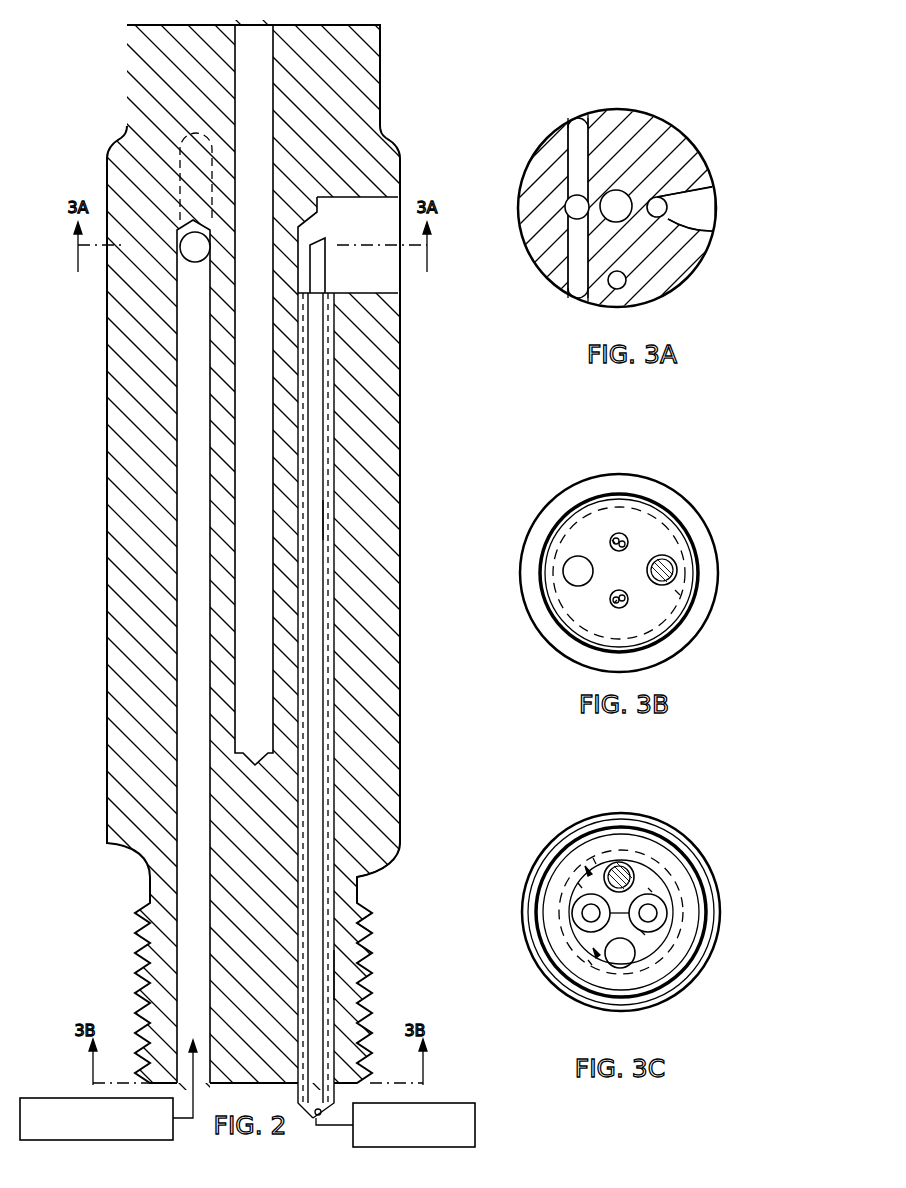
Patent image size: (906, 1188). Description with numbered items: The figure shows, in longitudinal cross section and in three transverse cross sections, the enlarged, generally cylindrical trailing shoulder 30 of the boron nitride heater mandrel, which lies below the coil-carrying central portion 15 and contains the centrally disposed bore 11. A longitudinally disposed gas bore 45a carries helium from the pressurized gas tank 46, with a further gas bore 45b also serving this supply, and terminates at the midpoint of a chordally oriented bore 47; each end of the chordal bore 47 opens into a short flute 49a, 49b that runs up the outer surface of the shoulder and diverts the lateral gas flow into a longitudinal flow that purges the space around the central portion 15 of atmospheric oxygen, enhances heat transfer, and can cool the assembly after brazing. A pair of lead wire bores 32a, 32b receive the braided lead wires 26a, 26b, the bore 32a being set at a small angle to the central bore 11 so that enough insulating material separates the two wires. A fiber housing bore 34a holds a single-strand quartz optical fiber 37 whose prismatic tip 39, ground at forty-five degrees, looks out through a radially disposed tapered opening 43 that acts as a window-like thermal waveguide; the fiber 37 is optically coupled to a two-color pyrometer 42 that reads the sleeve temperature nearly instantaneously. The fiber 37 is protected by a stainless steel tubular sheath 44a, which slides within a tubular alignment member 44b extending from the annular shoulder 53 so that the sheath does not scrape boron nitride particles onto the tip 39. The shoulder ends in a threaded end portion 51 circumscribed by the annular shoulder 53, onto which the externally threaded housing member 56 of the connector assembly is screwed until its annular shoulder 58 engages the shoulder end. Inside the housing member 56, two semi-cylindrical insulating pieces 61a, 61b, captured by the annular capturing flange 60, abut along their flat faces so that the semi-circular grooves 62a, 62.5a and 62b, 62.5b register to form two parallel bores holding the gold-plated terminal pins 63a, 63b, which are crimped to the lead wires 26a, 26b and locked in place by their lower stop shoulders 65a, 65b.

In FIG. 2, the centrally disposed bore 11 is at (238, 46).
In FIG. 3A, the centrally disposed bore 11 is at (620, 192).
In FIG. 2, the central portion 15 is at (176, 57).
In FIG. 2, the trailing shoulder 30 is at (140, 486).
In FIG. 3A, the trailing shoulder 30 is at (683, 118).
In FIG. 2, the chordally oriented bore 47 is at (195, 252).
In FIG. 3A, the chordally oriented bore 47 is at (575, 195).
In FIG. 2, the prismatic tip 39 is at (316, 242).
In FIG. 2, the tapered opening 43 is at (398, 293).
In FIG. 3A, the tapered opening 43 is at (716, 212).
In FIG. 2, the fiber housing bore 34a is at (328, 516).
In FIG. 3A, the fiber housing bore 34a is at (708, 187).
In FIG. 2, the gas bore 45a is at (178, 580).
In FIG. 3A, the gas bore 45a is at (568, 207).
In FIG. 3B, the gas bore 45a is at (564, 572).
In FIG. 2, the optical fiber 37 is at (314, 688).
In FIG. 3B, the optical fiber 37 is at (676, 590).
In FIG. 3C, the optical fiber 37 is at (590, 868).
In FIG. 2, the tubular sheath 44a is at (325, 772).
In FIG. 3B, the tubular sheath 44a is at (672, 578).
In FIG. 3C, the tubular sheath 44a is at (623, 872).
In FIG. 2, the tubular alignment member 44b is at (334, 970).
In FIG. 3B, the tubular alignment member 44b is at (670, 560).
In FIG. 3C, the tubular alignment member 44b is at (628, 875).
In FIG. 2, the annular shoulder 53 is at (370, 872).
In FIG. 3B, the annular shoulder 53 is at (692, 516).
In FIG. 2, the threaded end portion 51 is at (372, 944).
In FIG. 2, the pressurized gas tank 46 is at (77, 1097).
In FIG. 2, the two-color pyrometer 42 is at (476, 1125).
In FIG. 3A, the flute 49a is at (580, 117).
In FIG. 3A, the flute 49b is at (573, 293).
In FIG. 3B, the lead wire bore 32a is at (625, 536).
In FIG. 3A, the lead wire bore 32b is at (617, 285).
In FIG. 3B, the lead wire bore 32b is at (625, 605).
In FIG. 3B, the braided lead wire 26a is at (613, 540).
In FIG. 3B, the braided lead wire 26b is at (614, 604).
In FIG. 3C, the annular shoulder 58 is at (632, 815).
In FIG. 3C, the housing member 56 is at (680, 896).
In FIG. 3C, the capturing flange 60 is at (700, 937).
In FIG. 3C, the semi-cylindrical insulating piece 61a is at (592, 962).
In FIG. 3C, the semi-cylindrical insulating piece 61b is at (594, 862).
In FIG. 3C, the semi-circular groove 62a is at (641, 932).
In FIG. 3C, the semi-circular groove 62b is at (650, 890).
In FIG. 3C, the semi-circular groove 62.5a is at (575, 948).
In FIG. 3C, the semi-circular groove 62.5b is at (580, 886).
In FIG. 3C, the terminal pin 63a is at (586, 915).
In FIG. 3C, the terminal pin 63b is at (655, 930).
In FIG. 3C, the lower stop shoulder 65a is at (585, 910).
In FIG. 3C, the lower stop shoulder 65b is at (665, 913).
In FIG. 3C, the gas bore 45b is at (618, 966).